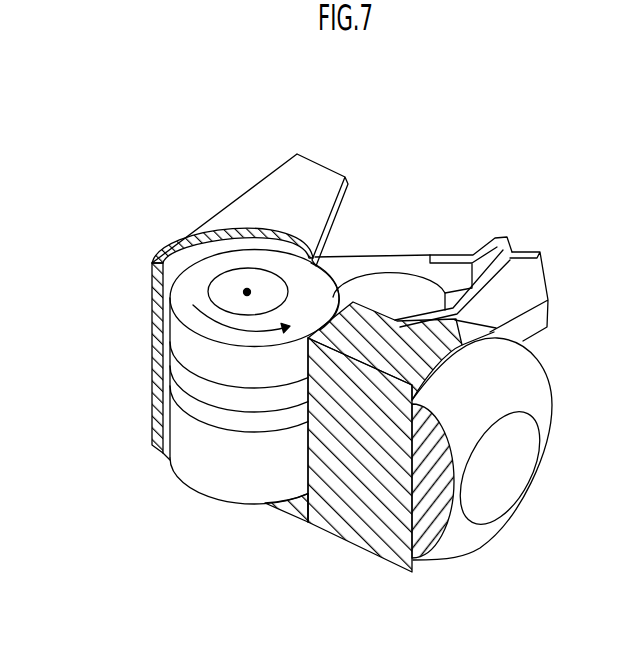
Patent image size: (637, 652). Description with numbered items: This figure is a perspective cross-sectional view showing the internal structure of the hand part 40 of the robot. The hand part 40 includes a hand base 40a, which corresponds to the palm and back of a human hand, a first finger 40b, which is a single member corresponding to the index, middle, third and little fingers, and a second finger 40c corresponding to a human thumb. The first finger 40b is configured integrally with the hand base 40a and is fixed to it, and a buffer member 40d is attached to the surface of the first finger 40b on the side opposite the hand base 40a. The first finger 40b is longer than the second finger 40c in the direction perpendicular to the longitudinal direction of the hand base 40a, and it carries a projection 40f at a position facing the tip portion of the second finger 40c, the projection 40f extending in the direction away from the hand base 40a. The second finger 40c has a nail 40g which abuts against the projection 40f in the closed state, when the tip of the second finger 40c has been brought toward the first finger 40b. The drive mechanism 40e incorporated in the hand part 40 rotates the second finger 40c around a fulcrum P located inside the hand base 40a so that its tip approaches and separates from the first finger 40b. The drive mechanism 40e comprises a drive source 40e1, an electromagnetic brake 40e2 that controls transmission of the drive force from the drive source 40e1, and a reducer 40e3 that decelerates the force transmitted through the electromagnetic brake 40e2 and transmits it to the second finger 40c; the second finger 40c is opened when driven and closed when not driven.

The hand part 40 is at (170, 167).
The hand base 40a is at (333, 522).
The first finger 40b is at (530, 345).
The second finger 40c is at (390, 250).
The buffer member 40d is at (497, 495).
The drive mechanism 40e is at (180, 367).
The drive source 40e1 is at (203, 462).
The electromagnetic brake 40e2 is at (153, 443).
The reducer 40e3 is at (150, 425).
The projection 40f is at (523, 279).
The nail 40g is at (470, 250).
The fulcrum P is at (247, 292).